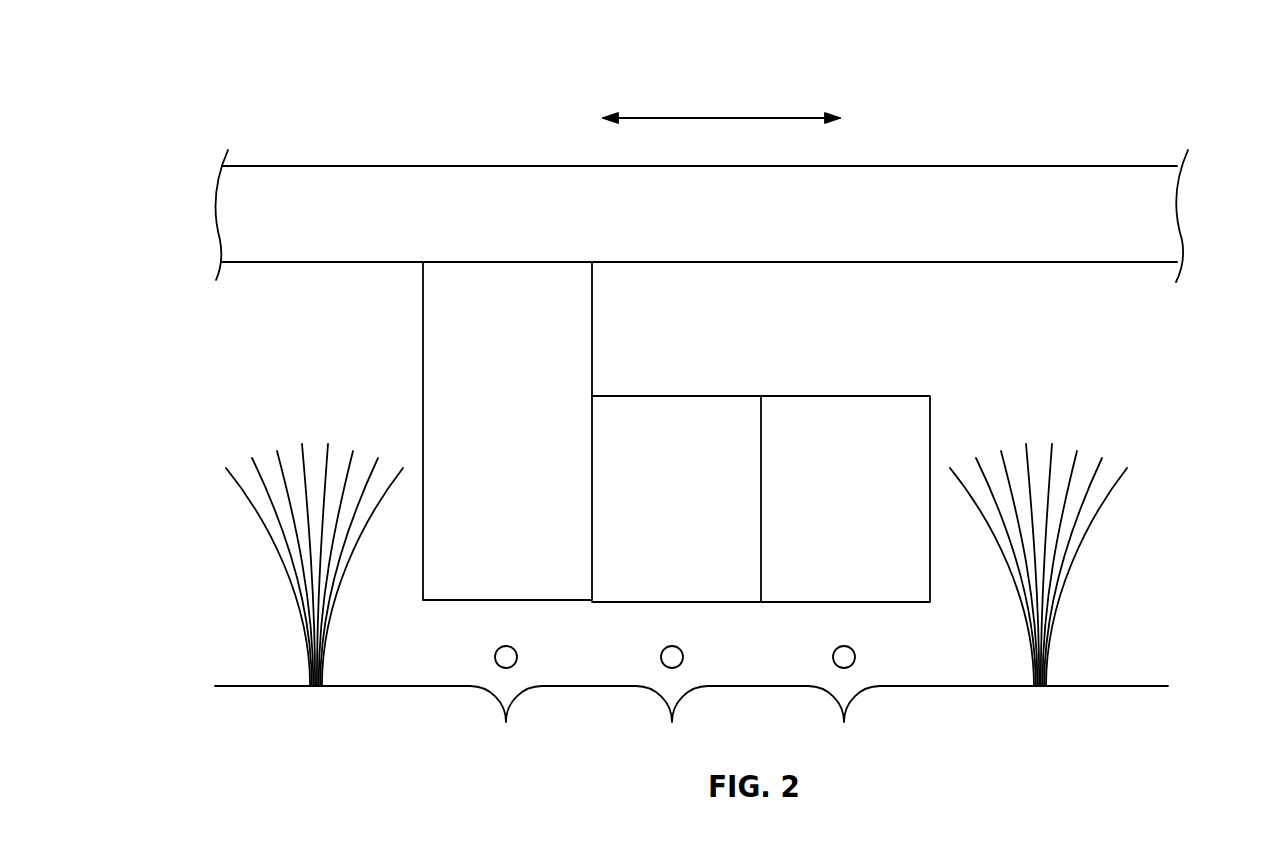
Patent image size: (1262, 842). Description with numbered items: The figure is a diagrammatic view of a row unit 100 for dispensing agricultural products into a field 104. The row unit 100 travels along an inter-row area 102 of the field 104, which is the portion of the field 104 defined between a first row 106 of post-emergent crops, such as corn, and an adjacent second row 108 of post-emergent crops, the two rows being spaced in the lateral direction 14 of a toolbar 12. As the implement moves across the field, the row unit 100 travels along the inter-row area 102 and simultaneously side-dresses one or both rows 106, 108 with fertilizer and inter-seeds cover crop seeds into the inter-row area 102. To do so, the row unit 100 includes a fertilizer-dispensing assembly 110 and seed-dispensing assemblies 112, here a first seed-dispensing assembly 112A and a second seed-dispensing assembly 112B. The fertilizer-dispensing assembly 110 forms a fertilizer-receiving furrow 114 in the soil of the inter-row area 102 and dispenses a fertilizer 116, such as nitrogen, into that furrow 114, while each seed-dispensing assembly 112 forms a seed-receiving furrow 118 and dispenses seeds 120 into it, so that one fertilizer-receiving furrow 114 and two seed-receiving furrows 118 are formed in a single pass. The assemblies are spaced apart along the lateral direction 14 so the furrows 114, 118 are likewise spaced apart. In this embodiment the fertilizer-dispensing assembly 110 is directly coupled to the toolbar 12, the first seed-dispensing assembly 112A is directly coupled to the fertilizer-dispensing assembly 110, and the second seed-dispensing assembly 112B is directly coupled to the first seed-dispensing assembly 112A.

The row unit 100 is at (403, 115).
The toolbar 12 is at (972, 166).
The lateral direction 14 is at (682, 117).
The inter-row area 102 is at (785, 672).
The field 104 is at (1106, 686).
The first row of post-emergent crops 106 is at (226, 532).
The second row of post-emergent crops 108 is at (1160, 513).
The fertilizer-dispensing assembly 110 is at (423, 363).
The seed-dispensing assembly 112 is at (802, 464).
The first seed-dispensing assembly 112A is at (628, 396).
The second seed-dispensing assembly 112B is at (862, 396).
The fertilizer-receiving furrow 114 is at (500, 684).
The fertilizer 116 is at (517, 657).
The seed-receiving furrow 118 is at (666, 684).
The seeds 120 is at (683, 657).